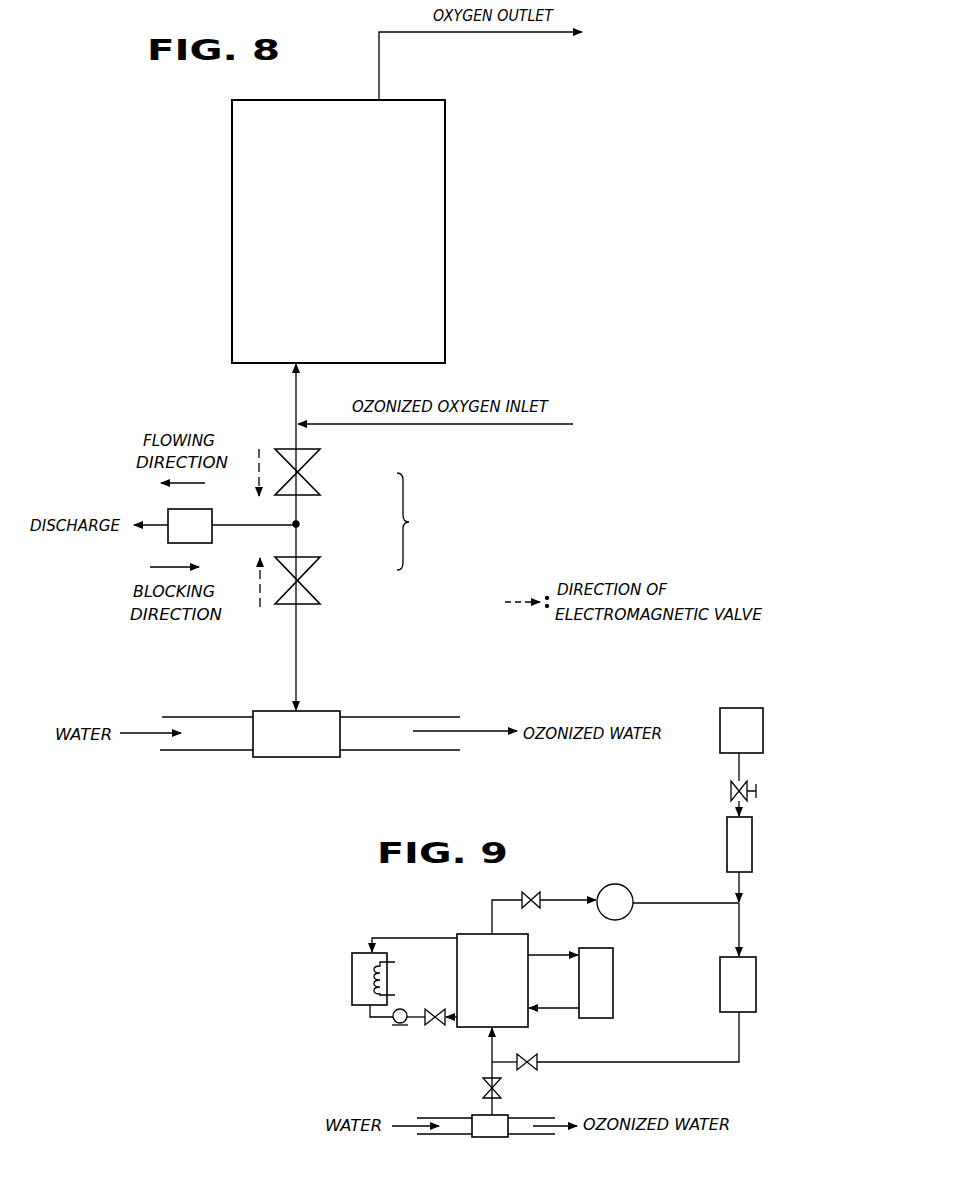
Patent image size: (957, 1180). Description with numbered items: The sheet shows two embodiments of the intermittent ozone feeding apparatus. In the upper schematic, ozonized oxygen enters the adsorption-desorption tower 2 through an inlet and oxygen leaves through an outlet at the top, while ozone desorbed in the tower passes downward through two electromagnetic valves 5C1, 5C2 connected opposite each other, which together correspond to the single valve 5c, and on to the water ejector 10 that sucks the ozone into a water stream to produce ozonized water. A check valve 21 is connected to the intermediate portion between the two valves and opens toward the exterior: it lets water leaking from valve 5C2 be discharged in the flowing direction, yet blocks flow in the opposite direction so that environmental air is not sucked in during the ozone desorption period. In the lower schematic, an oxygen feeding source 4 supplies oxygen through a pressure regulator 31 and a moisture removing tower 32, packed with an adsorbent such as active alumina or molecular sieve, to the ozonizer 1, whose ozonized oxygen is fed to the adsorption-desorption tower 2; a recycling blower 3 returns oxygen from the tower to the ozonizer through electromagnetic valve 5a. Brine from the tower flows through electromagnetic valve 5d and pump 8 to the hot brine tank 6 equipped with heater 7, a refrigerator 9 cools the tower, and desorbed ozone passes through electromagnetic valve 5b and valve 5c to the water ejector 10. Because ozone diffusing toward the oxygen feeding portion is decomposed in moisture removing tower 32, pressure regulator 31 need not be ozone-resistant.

In FIG. 9, the ozonizer 1 is at (756, 983).
In FIG. 8, the adsorption-desorption tower 2 is at (445, 163).
In FIG. 9, the adsorption-desorption tower 2 is at (478, 934).
In FIG. 9, the recycling blower 3 is at (620, 884).
In FIG. 9, the oxygen feeding source 4 is at (763, 733).
In FIG. 9, the electromagnetic valve 5a is at (533, 892).
In FIG. 9, the electromagnetic valve 5b is at (531, 1056).
In FIG. 8, the electromagnetic valve 5c is at (422, 521).
In FIG. 9, the electromagnetic valve 5c is at (498, 1090).
In FIG. 8, the electromagnetic valve 5C1 is at (308, 463).
In FIG. 8, the electromagnetic valve 5C2 is at (308, 590).
In FIG. 9, the electromagnetic valve 5d is at (434, 1026).
In FIG. 9, the hot brine tank 6 is at (352, 982).
In FIG. 9, the heater 7 is at (395, 961).
In FIG. 9, the pump 8 is at (393, 1022).
In FIG. 9, the refrigerator 9 is at (613, 965).
In FIG. 8, the water ejector 10 is at (330, 711).
In FIG. 9, the water ejector 10 is at (478, 1115).
In FIG. 8, the check valve 21 is at (168, 509).
In FIG. 9, the pressure regulator 31 is at (756, 791).
In FIG. 9, the moisture removing tower 32 is at (752, 845).